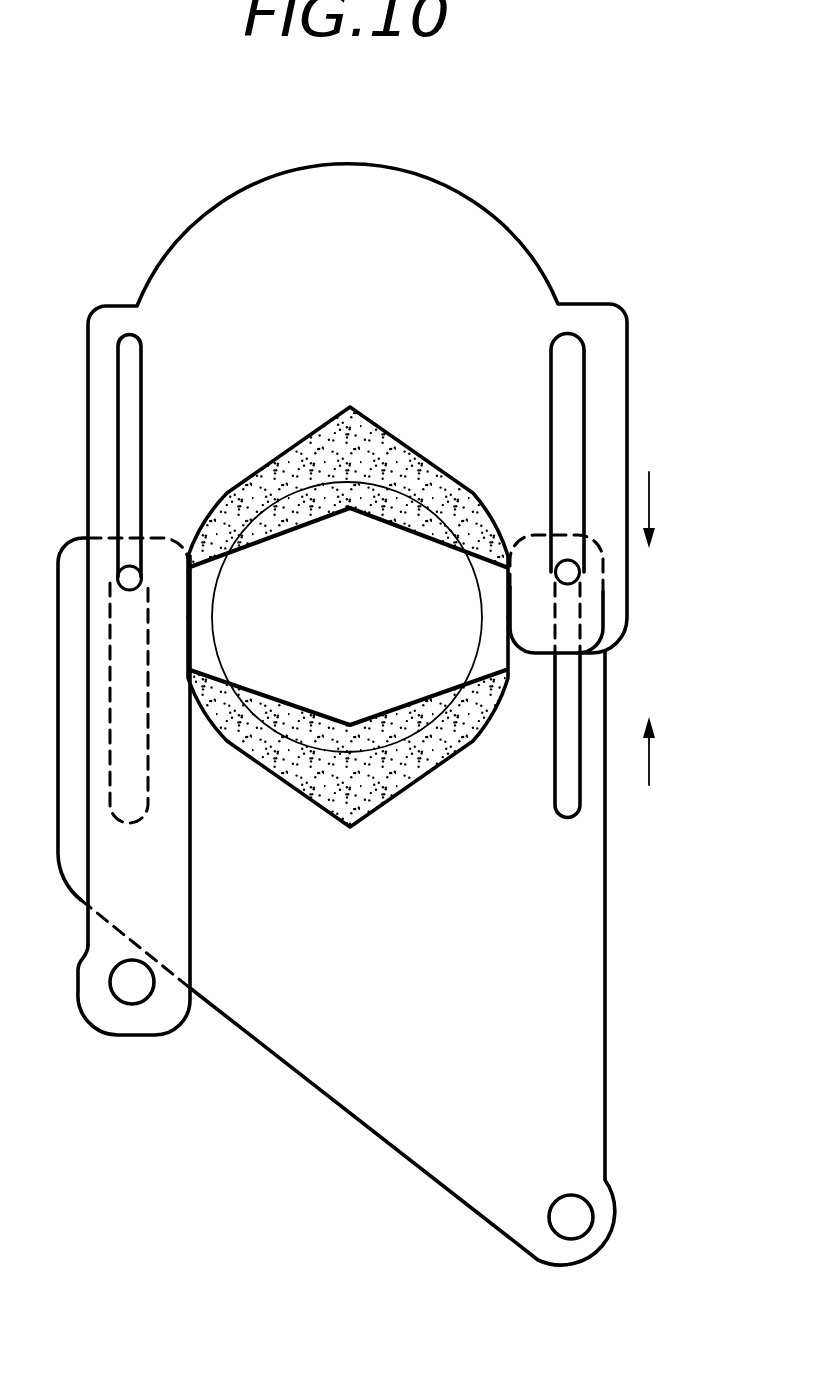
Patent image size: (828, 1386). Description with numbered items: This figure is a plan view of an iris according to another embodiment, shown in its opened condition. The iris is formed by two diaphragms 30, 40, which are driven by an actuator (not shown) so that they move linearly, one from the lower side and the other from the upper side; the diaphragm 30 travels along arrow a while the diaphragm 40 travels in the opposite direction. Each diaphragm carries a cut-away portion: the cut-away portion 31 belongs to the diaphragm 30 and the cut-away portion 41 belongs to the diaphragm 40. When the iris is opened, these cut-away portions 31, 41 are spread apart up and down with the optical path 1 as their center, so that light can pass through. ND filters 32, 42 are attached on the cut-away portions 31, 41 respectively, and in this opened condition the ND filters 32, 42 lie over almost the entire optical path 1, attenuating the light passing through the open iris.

The optical path 1 is at (307, 745).
The diaphragm 30 is at (605, 981).
The cut-away portion 31 is at (413, 783).
The ND filter 32 is at (413, 712).
The diaphragm 40 is at (630, 383).
The cut-away portion 41 is at (370, 423).
The ND filter 42 is at (282, 518).
The arrow α a is at (649, 761).